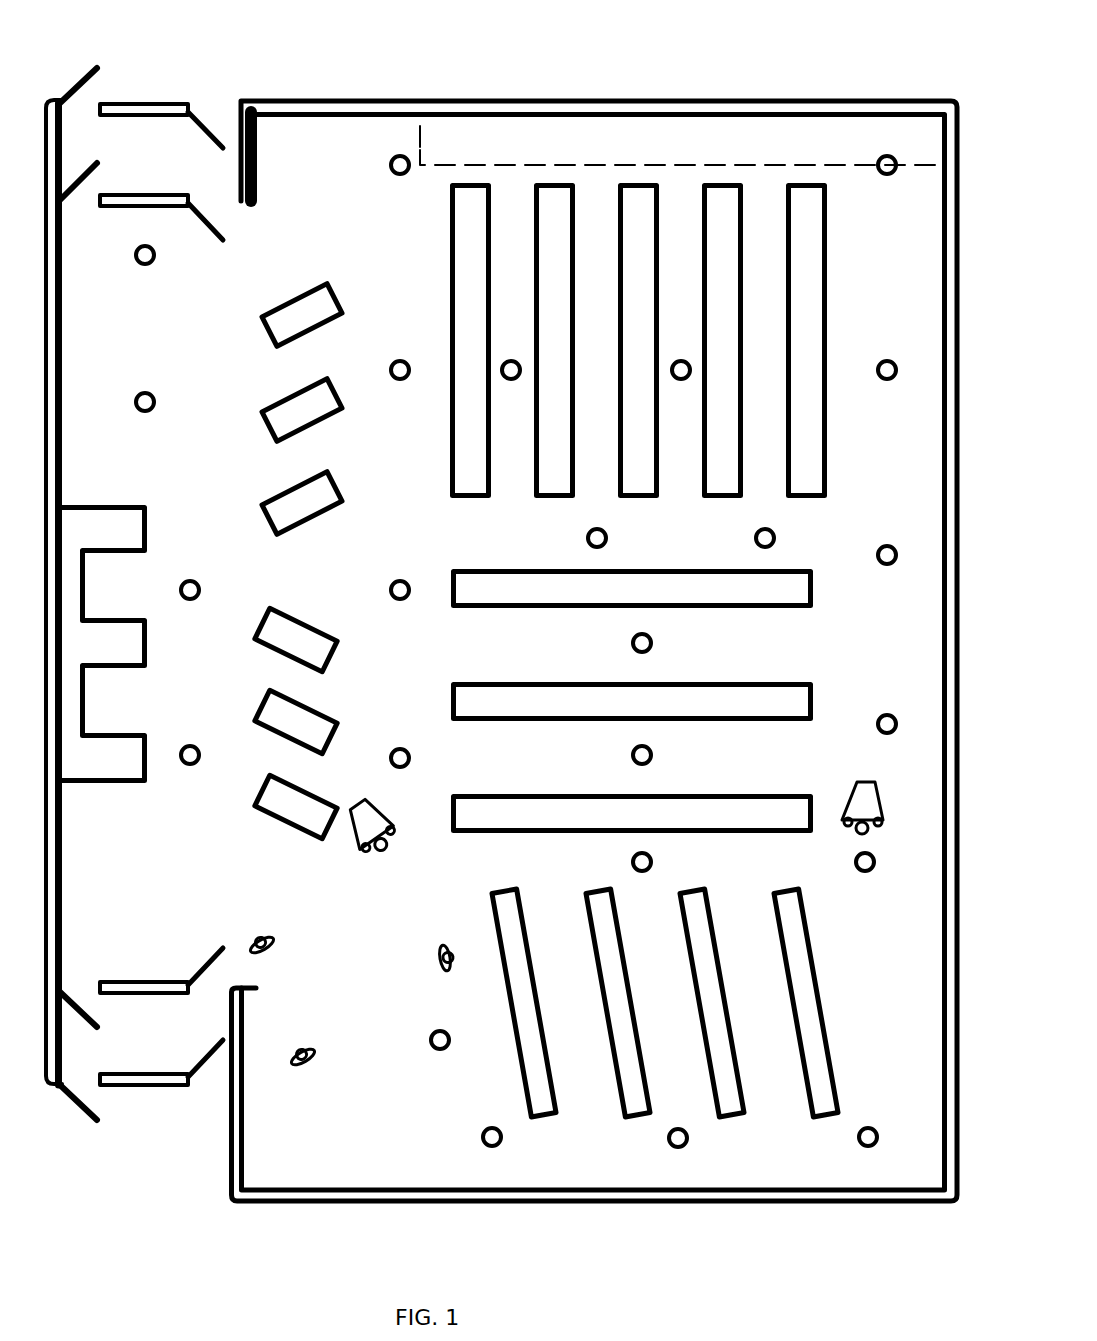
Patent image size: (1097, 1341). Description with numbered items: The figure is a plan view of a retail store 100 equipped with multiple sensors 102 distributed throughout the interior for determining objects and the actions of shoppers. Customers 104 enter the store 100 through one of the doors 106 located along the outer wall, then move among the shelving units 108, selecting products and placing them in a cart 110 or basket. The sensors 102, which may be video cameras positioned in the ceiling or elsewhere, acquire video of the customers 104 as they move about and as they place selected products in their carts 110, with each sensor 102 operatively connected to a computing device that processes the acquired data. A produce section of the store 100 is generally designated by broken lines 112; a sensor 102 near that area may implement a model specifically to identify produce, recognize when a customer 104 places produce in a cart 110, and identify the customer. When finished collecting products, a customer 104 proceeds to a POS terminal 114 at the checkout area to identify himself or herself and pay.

The retail store 100 is at (743, 60).
The sensors 102 is at (511, 360).
The customers 104 is at (385, 847).
The doors 106 is at (80, 95).
The shelving units 108 is at (117, 545).
The cart 110 is at (376, 822).
The broken lines 112 is at (418, 143).
The POS terminal 114 is at (283, 488).